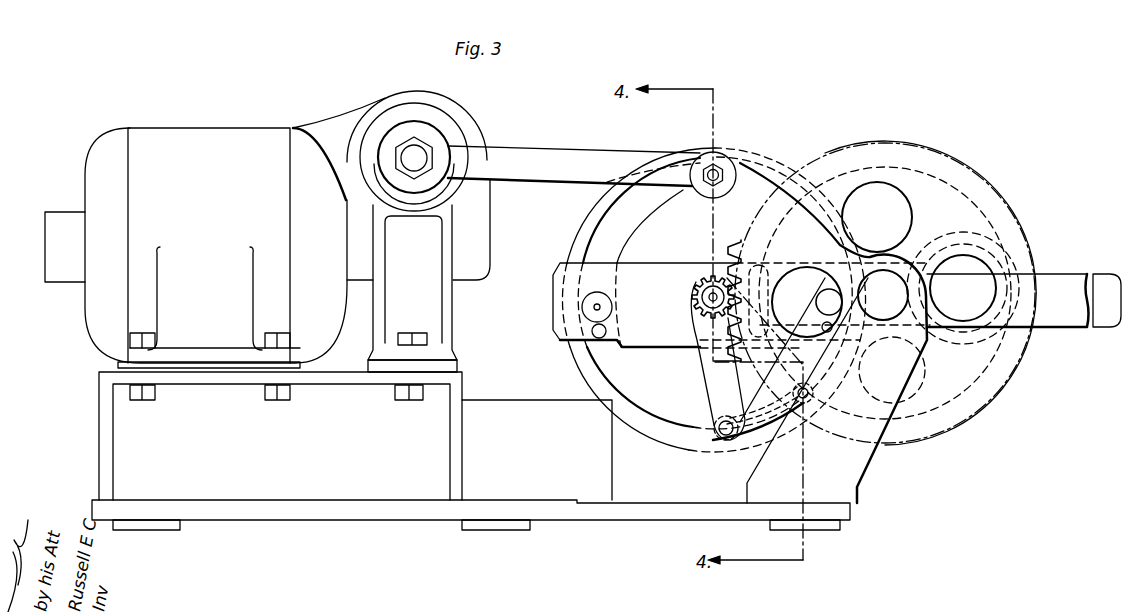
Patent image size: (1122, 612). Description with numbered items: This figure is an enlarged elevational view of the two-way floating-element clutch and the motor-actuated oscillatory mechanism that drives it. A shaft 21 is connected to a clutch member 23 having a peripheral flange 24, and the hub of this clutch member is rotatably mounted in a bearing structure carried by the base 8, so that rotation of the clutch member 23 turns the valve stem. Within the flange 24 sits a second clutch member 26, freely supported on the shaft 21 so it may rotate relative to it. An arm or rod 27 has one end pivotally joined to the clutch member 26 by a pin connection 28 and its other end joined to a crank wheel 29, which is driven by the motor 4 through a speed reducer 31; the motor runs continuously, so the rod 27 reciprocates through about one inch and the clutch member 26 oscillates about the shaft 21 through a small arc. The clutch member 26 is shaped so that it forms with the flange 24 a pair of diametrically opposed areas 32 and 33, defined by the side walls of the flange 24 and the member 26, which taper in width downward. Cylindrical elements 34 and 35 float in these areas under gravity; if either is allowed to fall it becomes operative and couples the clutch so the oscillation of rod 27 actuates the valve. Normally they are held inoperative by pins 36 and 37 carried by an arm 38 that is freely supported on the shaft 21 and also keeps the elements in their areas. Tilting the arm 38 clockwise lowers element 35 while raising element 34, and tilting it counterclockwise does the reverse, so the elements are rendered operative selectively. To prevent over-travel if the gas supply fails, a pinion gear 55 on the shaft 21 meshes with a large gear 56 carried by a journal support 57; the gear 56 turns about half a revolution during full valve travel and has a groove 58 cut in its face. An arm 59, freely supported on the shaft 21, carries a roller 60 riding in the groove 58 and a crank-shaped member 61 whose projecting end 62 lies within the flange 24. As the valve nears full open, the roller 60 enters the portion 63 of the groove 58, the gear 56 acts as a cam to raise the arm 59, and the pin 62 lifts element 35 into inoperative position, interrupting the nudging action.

The motor 4 is at (168, 146).
The base 8 is at (530, 416).
The shaft 21 is at (713, 292).
The clutch member 23 is at (677, 425).
The peripheral flange 24 is at (580, 233).
The clutch member 26 is at (650, 240).
The arm or rod 27 is at (560, 163).
The pin connection 28 is at (723, 167).
The crank wheel 29 is at (426, 206).
The speed reducer 31 is at (421, 106).
The area 32 is at (606, 316).
The area 33 is at (807, 302).
The cylindrical element 34 is at (583, 308).
The cylindrical element 35 is at (824, 268).
The pin 36 is at (595, 334).
The pin 37 is at (928, 338).
The arm 38 is at (690, 262).
The pinion gear 55 is at (698, 292).
The large gear 56 is at (728, 358).
The journal support 57 is at (866, 470).
The groove 58 is at (975, 398).
The arm 59 is at (717, 402).
The roller 60 is at (806, 412).
The crank-shaped member 61 is at (742, 423).
The projecting end 62 is at (804, 385).
The portion of the groove 63 is at (963, 235).